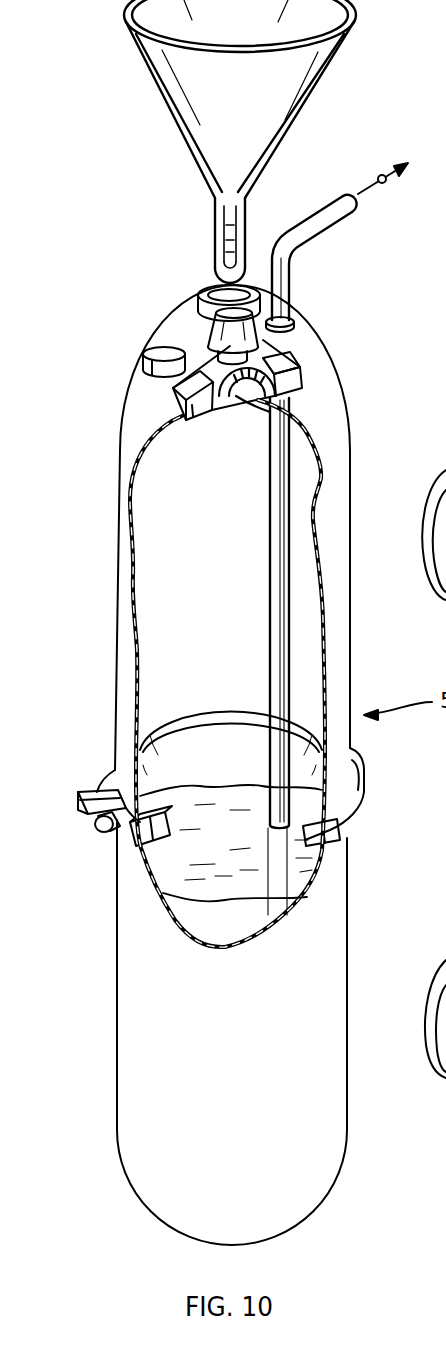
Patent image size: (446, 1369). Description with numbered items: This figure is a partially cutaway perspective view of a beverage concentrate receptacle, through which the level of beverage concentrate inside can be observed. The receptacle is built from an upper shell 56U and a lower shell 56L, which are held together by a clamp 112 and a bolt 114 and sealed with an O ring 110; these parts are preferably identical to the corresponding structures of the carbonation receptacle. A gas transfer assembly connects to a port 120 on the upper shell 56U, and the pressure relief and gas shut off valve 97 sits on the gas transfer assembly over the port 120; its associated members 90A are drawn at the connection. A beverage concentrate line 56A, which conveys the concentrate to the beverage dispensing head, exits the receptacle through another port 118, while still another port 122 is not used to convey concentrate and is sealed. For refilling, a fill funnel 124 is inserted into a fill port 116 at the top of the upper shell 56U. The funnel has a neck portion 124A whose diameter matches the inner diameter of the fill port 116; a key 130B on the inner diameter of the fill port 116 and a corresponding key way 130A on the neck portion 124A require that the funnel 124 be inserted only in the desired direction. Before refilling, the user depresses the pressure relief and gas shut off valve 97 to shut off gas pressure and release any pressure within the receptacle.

The fill funnel 124 is at (172, 166).
The neck portion 124A is at (212, 224).
The key way 130A is at (246, 222).
The key 130B is at (200, 297).
The fill port 116 is at (213, 290).
The beverage concentrate line 56A is at (314, 224).
The port 118 is at (291, 322).
The pressure relief and gas shut off valve 97 is at (260, 340).
The blocks 90A is at (176, 413).
The port 122 is at (146, 345).
The port 120 is at (298, 421).
The upper shell 56U is at (345, 631).
The lower shell 56L is at (336, 906).
The O ring 110 is at (175, 833).
The clamp 112 is at (118, 832).
The bolt 114 is at (98, 828).